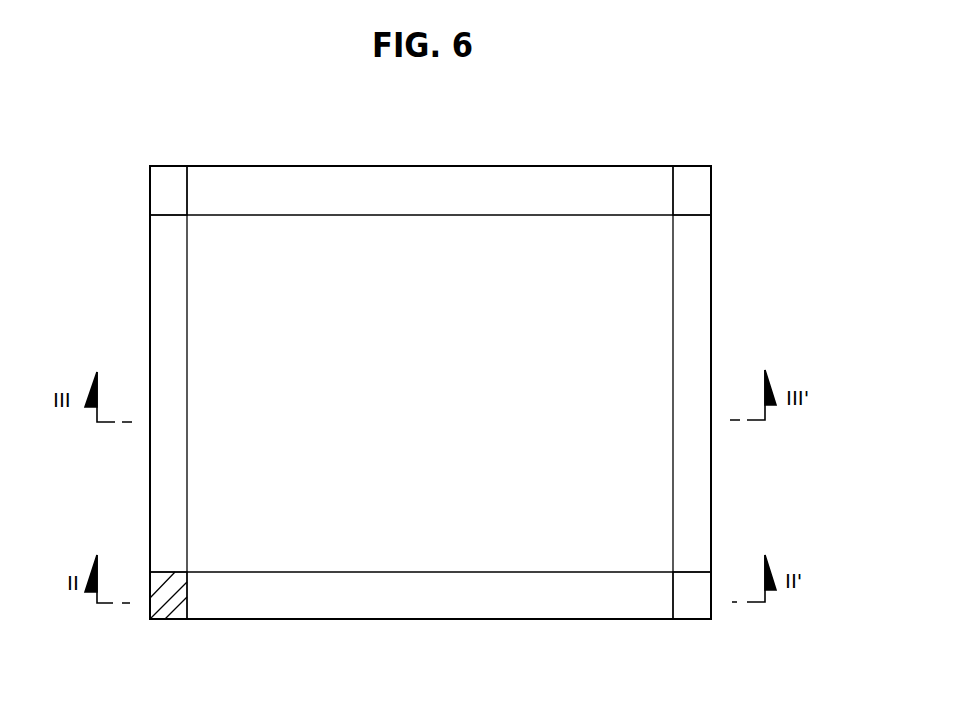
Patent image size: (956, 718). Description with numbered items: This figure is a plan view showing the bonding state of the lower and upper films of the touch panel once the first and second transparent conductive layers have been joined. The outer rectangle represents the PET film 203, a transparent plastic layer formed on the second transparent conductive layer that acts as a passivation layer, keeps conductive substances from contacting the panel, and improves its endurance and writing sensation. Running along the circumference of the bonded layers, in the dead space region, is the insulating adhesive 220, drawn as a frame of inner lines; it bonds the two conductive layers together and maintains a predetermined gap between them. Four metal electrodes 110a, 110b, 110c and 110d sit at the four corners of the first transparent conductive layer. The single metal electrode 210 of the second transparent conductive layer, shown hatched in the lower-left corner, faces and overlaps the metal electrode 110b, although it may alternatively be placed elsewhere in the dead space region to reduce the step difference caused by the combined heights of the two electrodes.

The PET film 203 is at (647, 488).
The insulating adhesive 220 is at (688, 328).
The metal electrode 210 is at (158, 592).
The metal electrode 110a is at (173, 180).
The metal electrode 110b is at (168, 608).
The metal electrode 110c is at (693, 608).
The metal electrode 110d is at (695, 177).